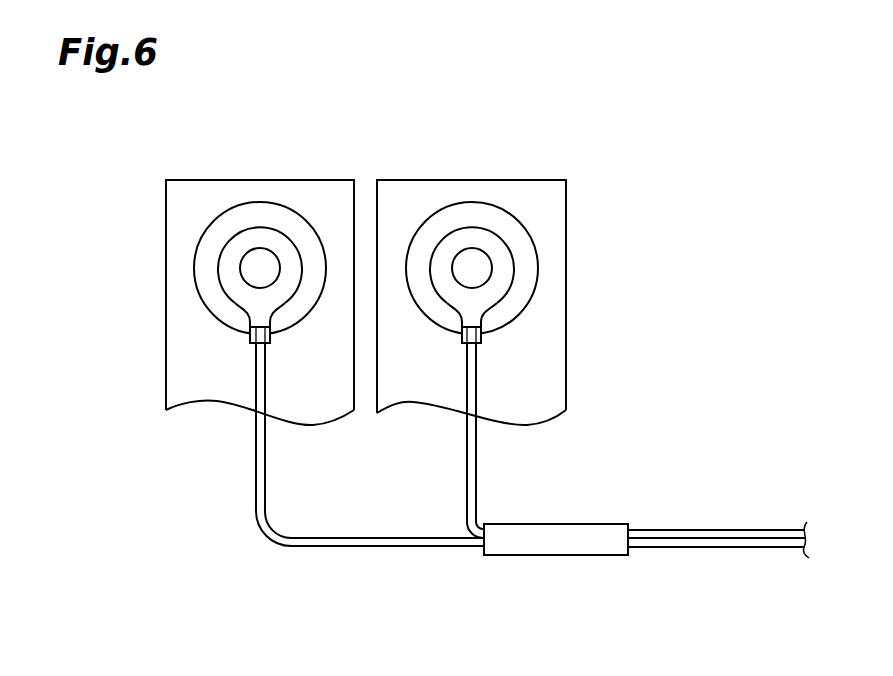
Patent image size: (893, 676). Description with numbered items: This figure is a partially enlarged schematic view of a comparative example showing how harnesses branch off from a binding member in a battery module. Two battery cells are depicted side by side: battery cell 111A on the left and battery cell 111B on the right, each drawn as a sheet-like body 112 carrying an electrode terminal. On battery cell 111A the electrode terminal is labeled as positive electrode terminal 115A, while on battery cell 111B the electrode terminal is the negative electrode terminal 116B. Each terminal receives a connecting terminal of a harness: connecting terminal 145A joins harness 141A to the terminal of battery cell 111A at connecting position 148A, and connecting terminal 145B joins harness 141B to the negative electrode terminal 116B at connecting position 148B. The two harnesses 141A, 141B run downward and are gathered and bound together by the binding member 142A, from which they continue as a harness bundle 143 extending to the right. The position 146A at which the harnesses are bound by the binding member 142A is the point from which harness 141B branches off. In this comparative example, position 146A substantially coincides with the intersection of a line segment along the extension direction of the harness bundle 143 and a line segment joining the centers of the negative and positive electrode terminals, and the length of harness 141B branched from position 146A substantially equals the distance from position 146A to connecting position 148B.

The first coil unit 111A is at (195, 236).
The battery cell 111B is at (563, 237).
The sheet 112 is at (166, 404).
The first coil 115A is at (195, 260).
The negative electrode terminal 116B is at (538, 259).
The coil conductor 145A is at (221, 284).
The connecting terminal 145B is at (511, 284).
The connection portion 148A is at (250, 336).
The connecting position 148B is at (481, 337).
The harness 141A is at (256, 487).
The harness 141B is at (467, 462).
The binding member 142A is at (605, 524).
The position at which harnesses are bound 146A is at (484, 555).
The harness bundle 143 is at (752, 500).